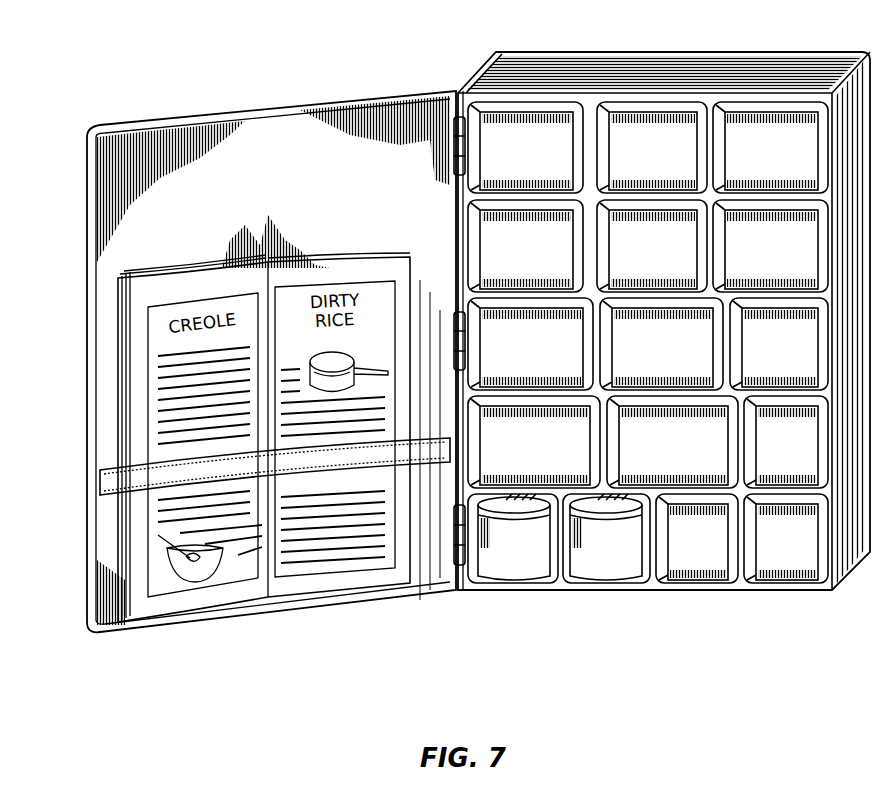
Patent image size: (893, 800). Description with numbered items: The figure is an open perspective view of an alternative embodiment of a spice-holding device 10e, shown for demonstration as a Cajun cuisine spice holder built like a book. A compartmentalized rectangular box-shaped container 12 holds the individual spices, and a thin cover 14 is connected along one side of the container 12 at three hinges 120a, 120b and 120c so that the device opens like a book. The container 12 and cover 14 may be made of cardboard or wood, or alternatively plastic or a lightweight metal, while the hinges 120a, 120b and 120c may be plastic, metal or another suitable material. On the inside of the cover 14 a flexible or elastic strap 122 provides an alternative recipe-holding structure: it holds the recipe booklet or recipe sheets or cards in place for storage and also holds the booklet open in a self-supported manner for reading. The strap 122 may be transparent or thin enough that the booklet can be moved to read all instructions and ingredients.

The spice-holding device 10e is at (664, 304).
The container 12 is at (578, 62).
The cover 14 is at (194, 121).
The hinge 120a is at (456, 126).
The hinge 120b is at (456, 300).
The hinge 120c is at (456, 566).
The flexible strap 122 is at (106, 485).